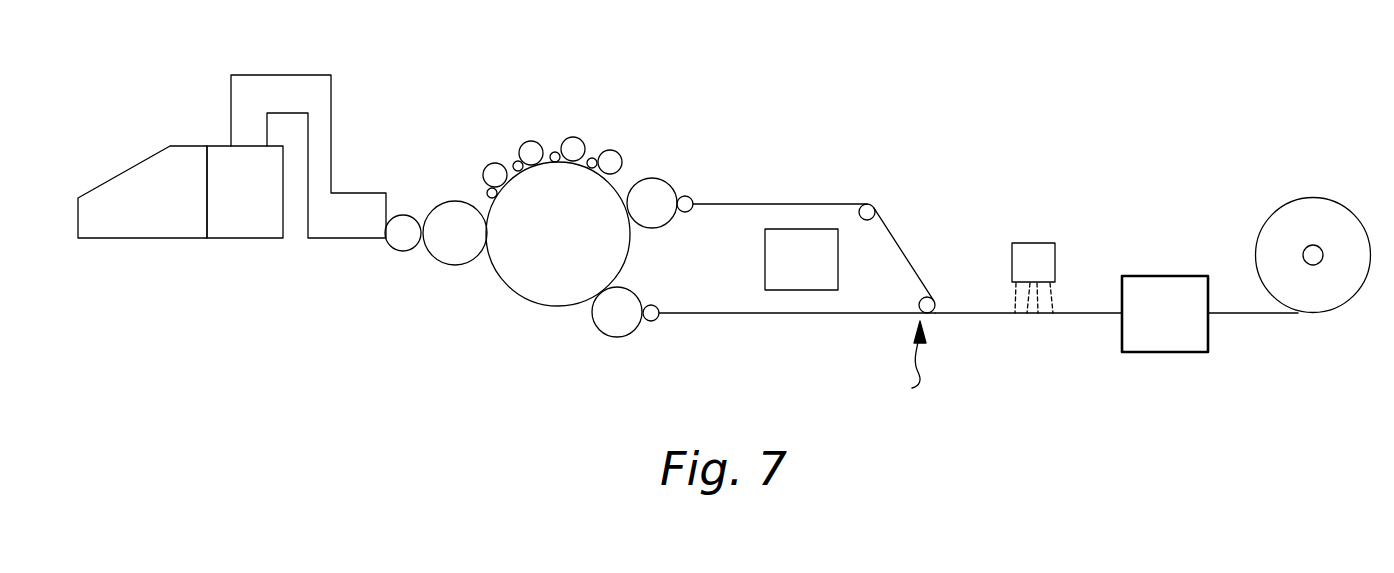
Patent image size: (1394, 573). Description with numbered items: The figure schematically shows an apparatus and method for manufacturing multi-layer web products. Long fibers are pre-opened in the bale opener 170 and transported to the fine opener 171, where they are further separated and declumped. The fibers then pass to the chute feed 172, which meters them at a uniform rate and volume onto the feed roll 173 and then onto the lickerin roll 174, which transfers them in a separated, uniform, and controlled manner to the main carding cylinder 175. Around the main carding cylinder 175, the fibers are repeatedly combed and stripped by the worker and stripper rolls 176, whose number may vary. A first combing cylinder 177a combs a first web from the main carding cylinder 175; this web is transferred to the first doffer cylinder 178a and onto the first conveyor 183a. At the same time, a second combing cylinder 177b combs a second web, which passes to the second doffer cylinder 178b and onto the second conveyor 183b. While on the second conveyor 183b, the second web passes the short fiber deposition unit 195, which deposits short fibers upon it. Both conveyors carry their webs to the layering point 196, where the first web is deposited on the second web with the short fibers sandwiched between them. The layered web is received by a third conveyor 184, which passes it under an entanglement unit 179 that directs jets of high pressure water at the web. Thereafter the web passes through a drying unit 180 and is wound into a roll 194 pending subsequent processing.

The bale opener 170 is at (127, 240).
The fine opener 171 is at (237, 240).
The chute feed 172 is at (343, 240).
The feed roll 173 is at (404, 214).
The lickerin roll 174 is at (452, 266).
The main carding cylinder 175 is at (512, 290).
The worker and stripper rolls 176 is at (523, 145).
The first combing cylinder 177a is at (659, 178).
The second combing cylinder 177b is at (610, 337).
The first doffer cylinder 178a is at (688, 196).
The second doffer cylinder 178b is at (656, 321).
The first conveyor 183a is at (805, 203).
The second conveyor 183b is at (822, 314).
The third conveyor 184 is at (973, 314).
The short fiber deposition unit 195 is at (765, 265).
The layering point 196 is at (900, 362).
The entanglement unit 179 is at (1055, 263).
The drying unit 180 is at (1167, 353).
The roll 194 is at (1257, 238).